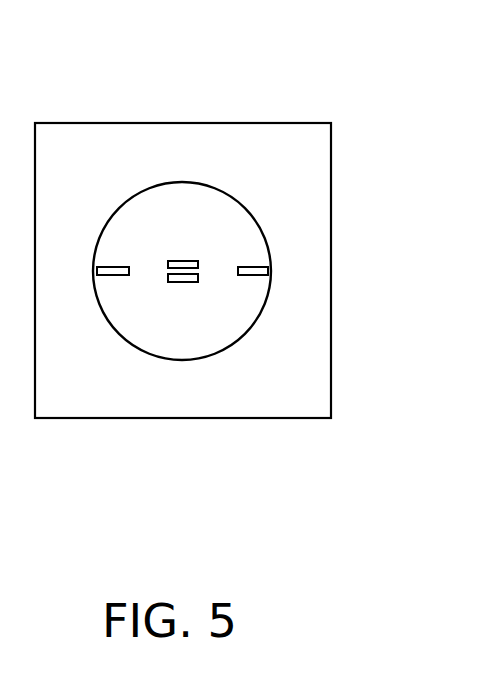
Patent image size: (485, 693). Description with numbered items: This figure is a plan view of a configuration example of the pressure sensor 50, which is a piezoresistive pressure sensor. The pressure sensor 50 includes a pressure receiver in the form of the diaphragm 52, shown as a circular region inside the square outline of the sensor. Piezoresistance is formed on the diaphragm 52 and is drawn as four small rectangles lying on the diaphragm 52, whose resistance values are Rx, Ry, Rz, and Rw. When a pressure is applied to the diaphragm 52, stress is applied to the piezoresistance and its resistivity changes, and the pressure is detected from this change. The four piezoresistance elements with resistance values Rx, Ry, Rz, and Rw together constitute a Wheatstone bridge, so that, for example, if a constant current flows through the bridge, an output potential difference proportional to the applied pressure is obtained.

The pressure sensor 50 is at (389, 67).
The diaphragm 52 is at (235, 199).
The resistance value of piezoresistance Rx is at (252, 287).
The resistance value of piezoresistance Ry is at (183, 251).
The resistance value of piezoresistance Rz is at (113, 287).
The resistance value of piezoresistance Rw is at (184, 290).